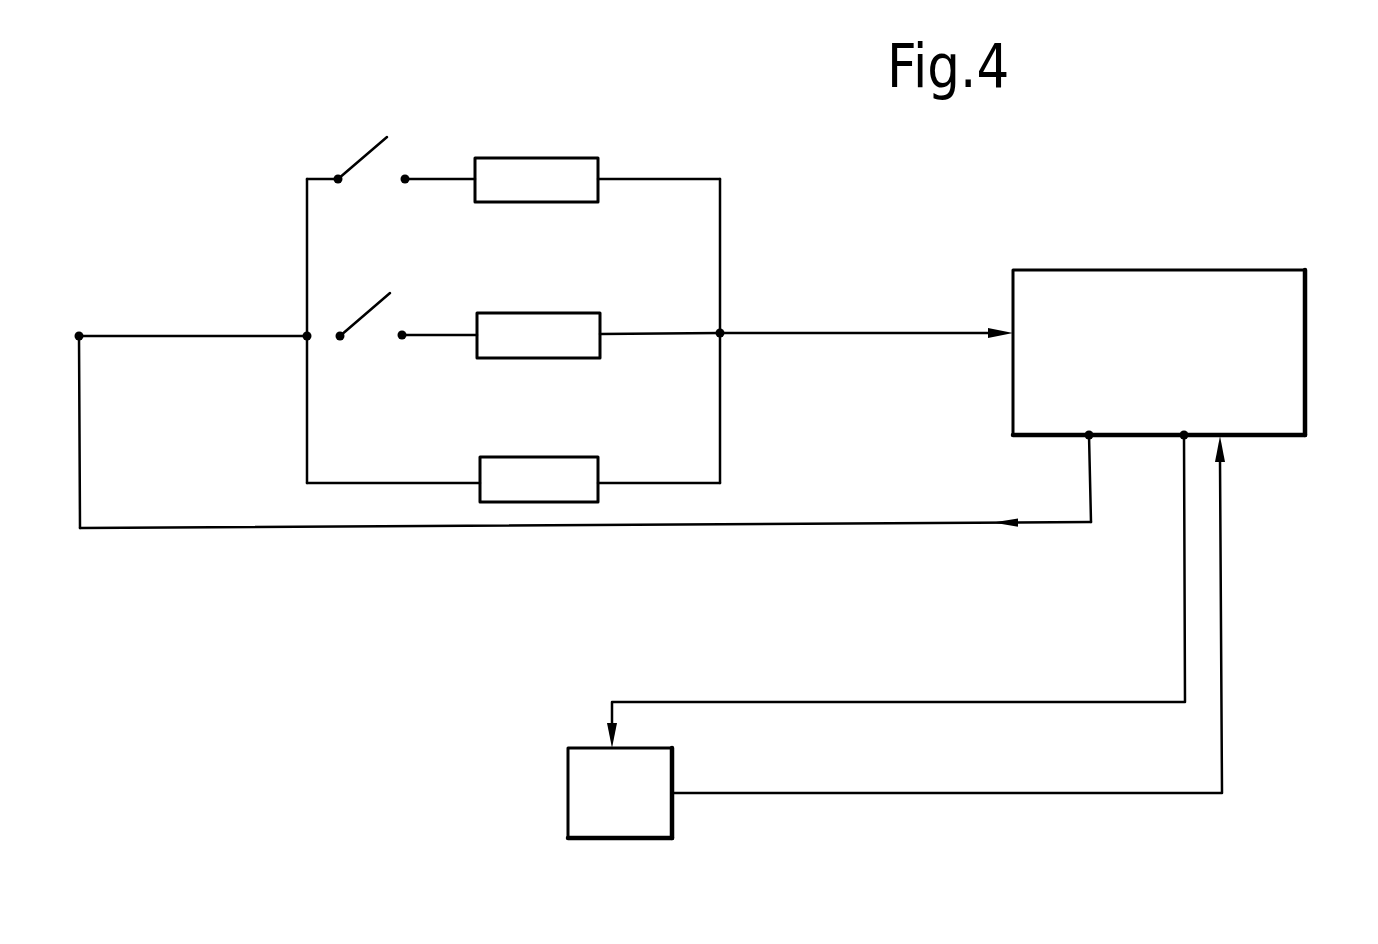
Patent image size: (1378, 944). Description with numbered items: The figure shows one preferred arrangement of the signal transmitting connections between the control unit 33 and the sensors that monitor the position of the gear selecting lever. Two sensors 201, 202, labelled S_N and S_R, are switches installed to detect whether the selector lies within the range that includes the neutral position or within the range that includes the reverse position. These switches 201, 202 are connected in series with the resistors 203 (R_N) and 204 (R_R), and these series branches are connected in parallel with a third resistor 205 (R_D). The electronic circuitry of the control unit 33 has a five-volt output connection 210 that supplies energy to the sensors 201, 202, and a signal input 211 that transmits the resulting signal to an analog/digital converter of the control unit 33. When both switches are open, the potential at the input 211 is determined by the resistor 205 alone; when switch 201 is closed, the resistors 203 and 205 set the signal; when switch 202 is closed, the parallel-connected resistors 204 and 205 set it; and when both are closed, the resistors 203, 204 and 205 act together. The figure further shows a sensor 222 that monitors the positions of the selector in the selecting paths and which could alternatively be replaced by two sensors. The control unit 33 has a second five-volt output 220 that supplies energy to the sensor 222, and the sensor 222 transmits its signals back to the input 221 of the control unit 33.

The sensor (switch) S_N 201 is at (355, 160).
The sensor (switch) S_R 202 is at (312, 286).
The resistor R_N 203 is at (535, 162).
The resistor R_R 204 is at (580, 325).
The third resistor R_D 205 is at (575, 465).
The signal input 211 is at (1010, 300).
The control unit 33 is at (1193, 365).
The 5-volt output connection 210 is at (1098, 435).
The second 5-volt output 220 is at (1188, 435).
The input 221 is at (1223, 437).
The sensor 222 is at (628, 812).